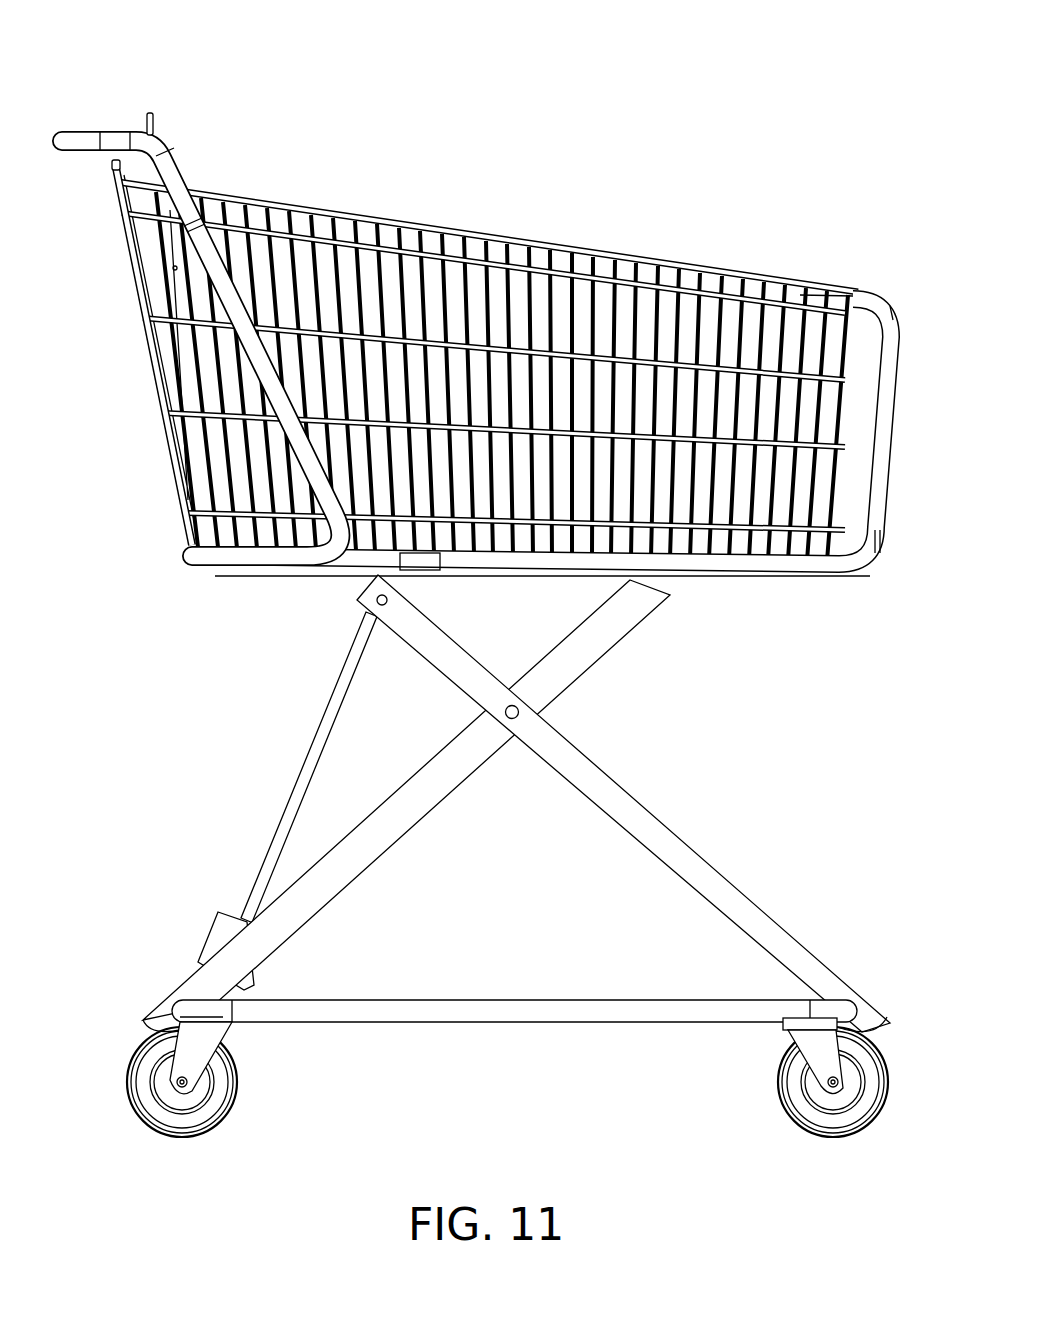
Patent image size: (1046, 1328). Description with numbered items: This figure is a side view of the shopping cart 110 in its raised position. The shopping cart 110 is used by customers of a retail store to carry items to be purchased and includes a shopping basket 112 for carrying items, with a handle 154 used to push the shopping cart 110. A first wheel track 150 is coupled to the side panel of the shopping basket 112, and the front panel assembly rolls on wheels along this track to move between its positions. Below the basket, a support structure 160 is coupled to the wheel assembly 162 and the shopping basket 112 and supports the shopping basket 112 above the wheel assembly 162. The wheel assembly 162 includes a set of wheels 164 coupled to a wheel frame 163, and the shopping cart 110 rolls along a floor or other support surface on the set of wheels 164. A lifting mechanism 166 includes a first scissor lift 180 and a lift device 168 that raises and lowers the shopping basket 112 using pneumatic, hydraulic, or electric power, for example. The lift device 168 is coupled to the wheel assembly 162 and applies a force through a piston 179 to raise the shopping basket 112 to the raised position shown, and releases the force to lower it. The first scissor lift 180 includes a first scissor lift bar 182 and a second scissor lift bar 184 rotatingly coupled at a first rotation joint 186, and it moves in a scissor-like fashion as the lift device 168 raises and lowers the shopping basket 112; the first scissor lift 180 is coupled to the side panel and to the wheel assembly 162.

The shopping cart 110 is at (501, 627).
The shopping basket 112 is at (529, 347).
The first wheel track 150 is at (887, 330).
The handle 154 is at (57, 130).
The support structure 160 is at (476, 909).
The wheel assembly 162 is at (484, 1121).
The wheel frame 163 is at (683, 1008).
The set of wheels 164 is at (173, 1180).
The lifting mechanism 166 is at (506, 803).
The lift device 168 is at (222, 930).
The piston 179 is at (318, 740).
The first scissor lift 180 is at (602, 679).
The first scissor lift bar 182 is at (668, 855).
The second scissor lift bar 184 is at (378, 838).
The first rotation joint 186 is at (513, 720).